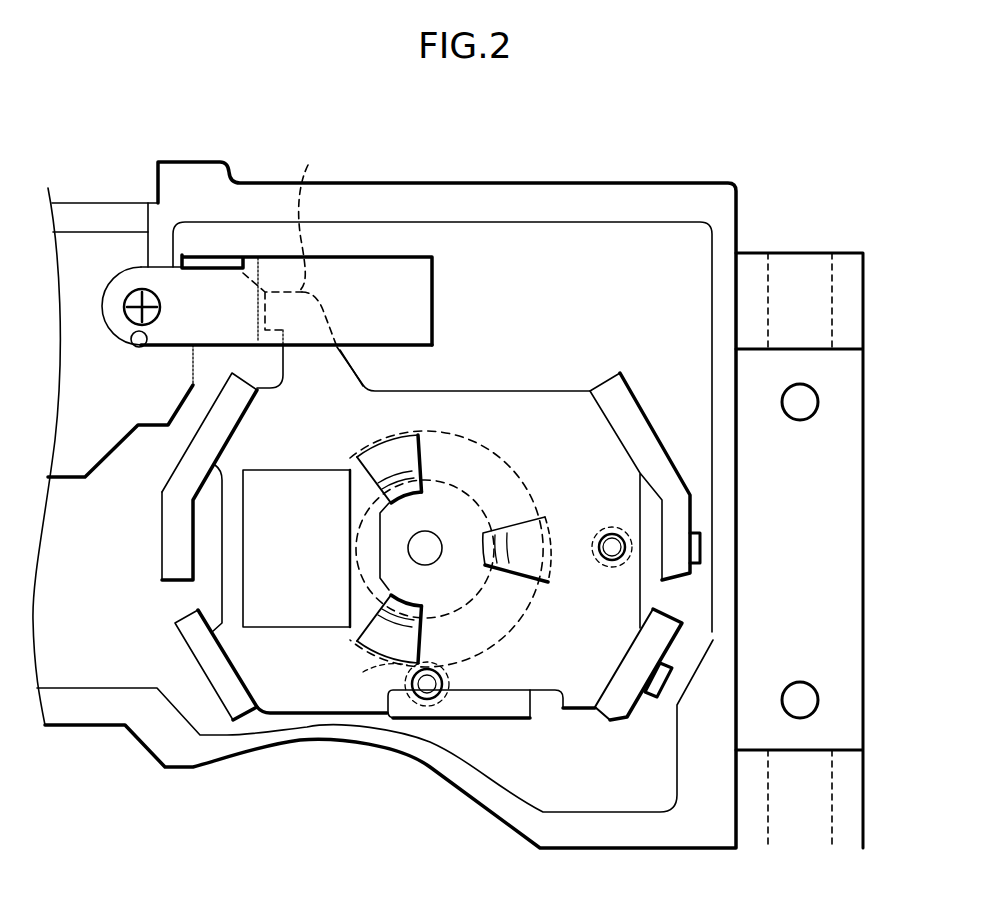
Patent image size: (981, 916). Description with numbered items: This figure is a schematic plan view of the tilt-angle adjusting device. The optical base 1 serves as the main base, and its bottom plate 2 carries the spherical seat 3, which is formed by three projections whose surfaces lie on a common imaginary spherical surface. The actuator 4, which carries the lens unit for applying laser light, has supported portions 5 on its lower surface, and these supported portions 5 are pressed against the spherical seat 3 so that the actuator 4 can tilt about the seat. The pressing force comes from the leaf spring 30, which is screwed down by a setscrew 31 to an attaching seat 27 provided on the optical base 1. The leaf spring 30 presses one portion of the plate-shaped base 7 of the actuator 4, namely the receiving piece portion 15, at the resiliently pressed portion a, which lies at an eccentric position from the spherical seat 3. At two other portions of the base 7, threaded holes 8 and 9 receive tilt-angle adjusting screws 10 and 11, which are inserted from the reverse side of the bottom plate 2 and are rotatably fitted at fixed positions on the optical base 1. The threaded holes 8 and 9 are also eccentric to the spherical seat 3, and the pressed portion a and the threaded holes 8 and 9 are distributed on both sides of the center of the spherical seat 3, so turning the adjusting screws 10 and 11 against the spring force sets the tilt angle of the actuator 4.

The optical base 1 is at (539, 178).
The bottom plate 2 is at (623, 288).
The spherical seat 3 is at (502, 470).
The actuator 4 is at (491, 382).
The supported portions 5 is at (430, 438).
The plate-shaped base 7 is at (413, 396).
The threaded hole 8 is at (613, 561).
The threaded hole 9 is at (447, 683).
The tilt-angle adjusting screw 10 is at (608, 527).
The tilt-angle adjusting screw 11 is at (375, 675).
The receiving piece portion 15 is at (458, 265).
The attaching seat 27 is at (131, 348).
The leaf spring 30 is at (366, 246).
The setscrew 31 is at (131, 291).
The resiliently pressed portion a is at (243, 273).